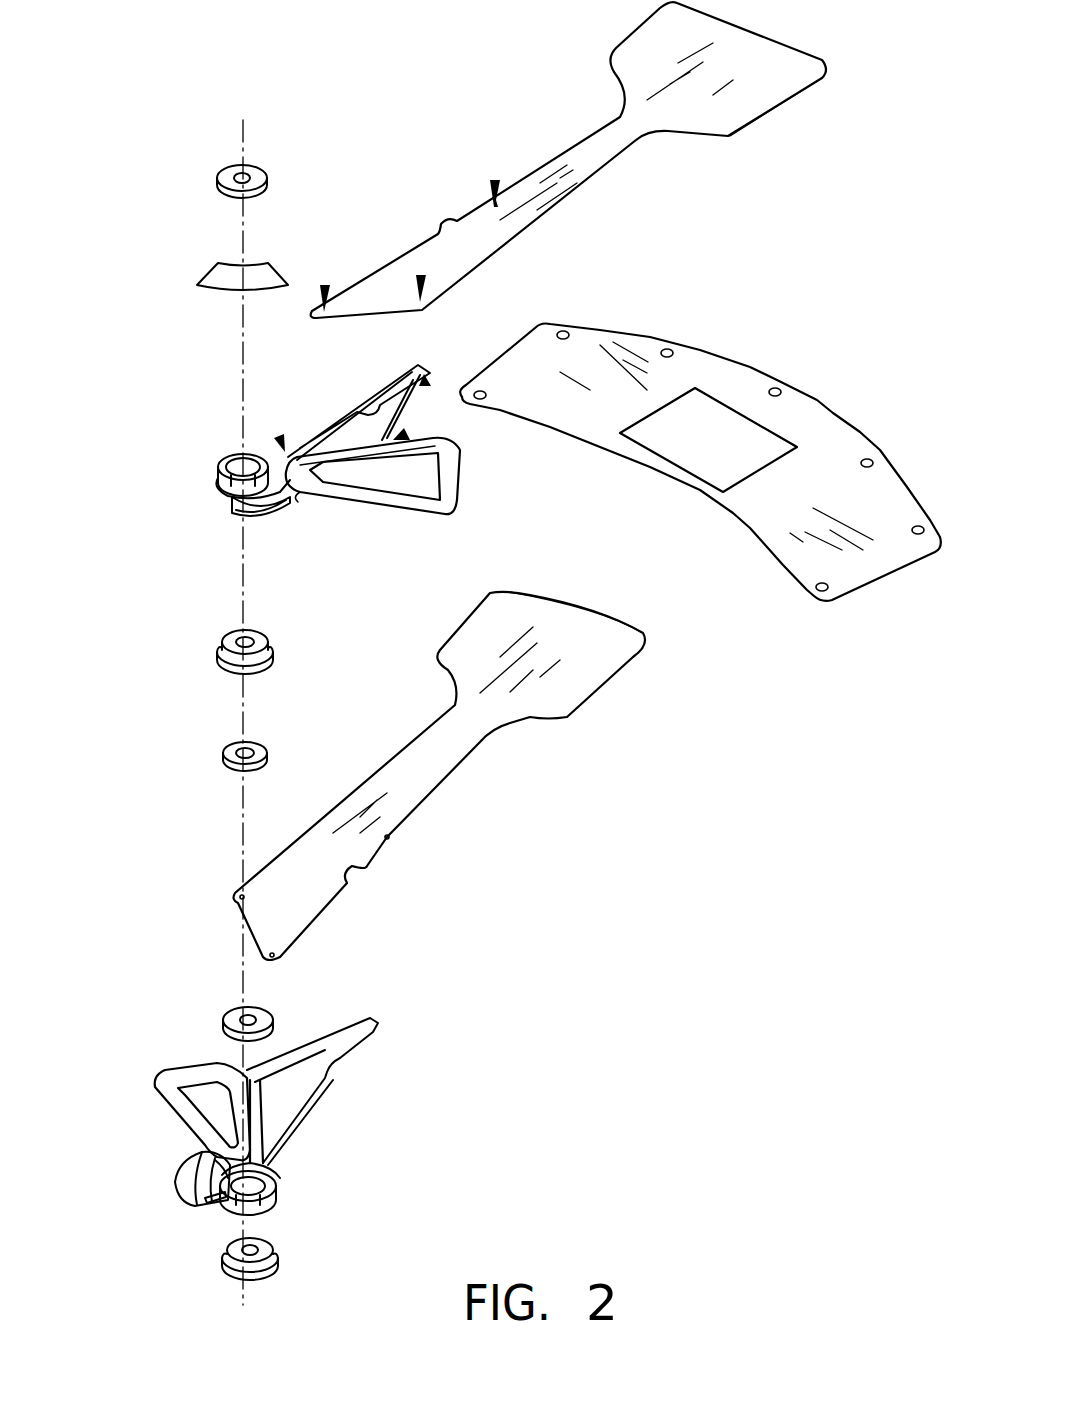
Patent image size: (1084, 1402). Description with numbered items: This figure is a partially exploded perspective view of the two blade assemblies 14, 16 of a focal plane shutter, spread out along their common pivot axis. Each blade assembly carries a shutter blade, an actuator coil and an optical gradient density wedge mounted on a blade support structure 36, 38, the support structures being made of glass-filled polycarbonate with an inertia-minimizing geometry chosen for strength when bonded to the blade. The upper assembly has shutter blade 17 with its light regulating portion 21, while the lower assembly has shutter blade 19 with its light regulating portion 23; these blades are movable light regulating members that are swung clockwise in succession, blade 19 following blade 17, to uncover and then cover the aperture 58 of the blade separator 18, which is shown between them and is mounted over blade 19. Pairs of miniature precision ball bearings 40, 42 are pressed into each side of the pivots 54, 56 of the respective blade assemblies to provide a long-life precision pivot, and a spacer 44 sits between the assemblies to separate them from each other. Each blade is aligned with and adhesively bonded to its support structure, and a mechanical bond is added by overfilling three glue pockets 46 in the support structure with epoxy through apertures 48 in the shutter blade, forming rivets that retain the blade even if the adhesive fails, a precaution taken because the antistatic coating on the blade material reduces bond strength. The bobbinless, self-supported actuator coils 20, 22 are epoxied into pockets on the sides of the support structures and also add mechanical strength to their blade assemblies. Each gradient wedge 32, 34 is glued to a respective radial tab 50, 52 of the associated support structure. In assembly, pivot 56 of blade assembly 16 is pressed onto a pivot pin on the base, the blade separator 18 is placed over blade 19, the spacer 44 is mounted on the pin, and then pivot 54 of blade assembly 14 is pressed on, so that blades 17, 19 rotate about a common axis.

The blade assembly 14 is at (437, 118).
The blade assembly 16 is at (445, 1046).
The shutter blade 17 is at (415, 258).
The blade separator 18 is at (840, 425).
The shutter blade 19 is at (292, 915).
The actuator coil 20 is at (165, 1073).
The light regulating portion 21 is at (792, 64).
The actuator coil 22 is at (460, 481).
The light regulating portion 23 is at (573, 617).
The gradient wedge 32 is at (188, 1163).
The gradient wedge 34 is at (218, 272).
The blade support structure 36 is at (327, 1092).
The blade support structure 38 is at (353, 407).
The ball bearing 40 is at (225, 172).
The ball bearing 42 is at (230, 1013).
The spacer 44 is at (222, 745).
The glue pockets 46 is at (279, 440).
The apertures 48 is at (495, 186).
The radial tab 50 is at (270, 503).
The radial tab 52 is at (220, 1197).
The pivot 54 is at (220, 482).
The pivot 56 is at (273, 1200).
The aperture 58 is at (703, 408).